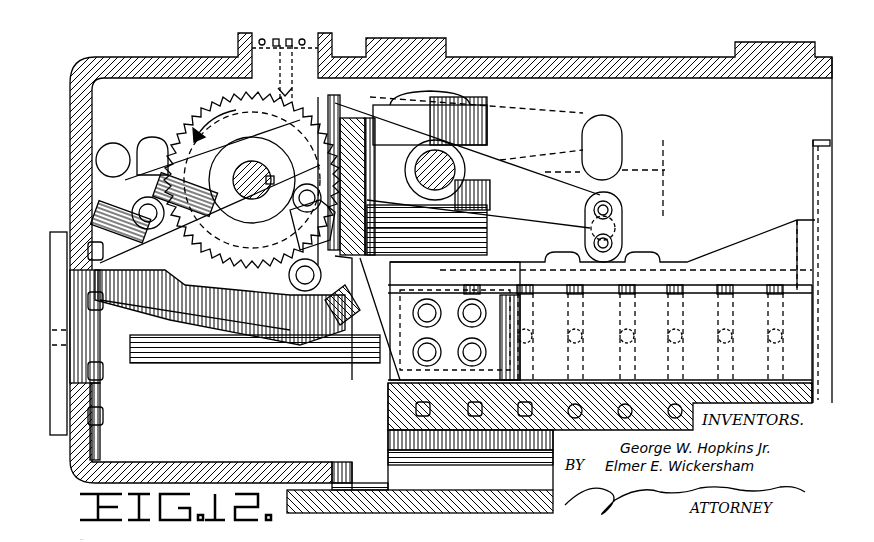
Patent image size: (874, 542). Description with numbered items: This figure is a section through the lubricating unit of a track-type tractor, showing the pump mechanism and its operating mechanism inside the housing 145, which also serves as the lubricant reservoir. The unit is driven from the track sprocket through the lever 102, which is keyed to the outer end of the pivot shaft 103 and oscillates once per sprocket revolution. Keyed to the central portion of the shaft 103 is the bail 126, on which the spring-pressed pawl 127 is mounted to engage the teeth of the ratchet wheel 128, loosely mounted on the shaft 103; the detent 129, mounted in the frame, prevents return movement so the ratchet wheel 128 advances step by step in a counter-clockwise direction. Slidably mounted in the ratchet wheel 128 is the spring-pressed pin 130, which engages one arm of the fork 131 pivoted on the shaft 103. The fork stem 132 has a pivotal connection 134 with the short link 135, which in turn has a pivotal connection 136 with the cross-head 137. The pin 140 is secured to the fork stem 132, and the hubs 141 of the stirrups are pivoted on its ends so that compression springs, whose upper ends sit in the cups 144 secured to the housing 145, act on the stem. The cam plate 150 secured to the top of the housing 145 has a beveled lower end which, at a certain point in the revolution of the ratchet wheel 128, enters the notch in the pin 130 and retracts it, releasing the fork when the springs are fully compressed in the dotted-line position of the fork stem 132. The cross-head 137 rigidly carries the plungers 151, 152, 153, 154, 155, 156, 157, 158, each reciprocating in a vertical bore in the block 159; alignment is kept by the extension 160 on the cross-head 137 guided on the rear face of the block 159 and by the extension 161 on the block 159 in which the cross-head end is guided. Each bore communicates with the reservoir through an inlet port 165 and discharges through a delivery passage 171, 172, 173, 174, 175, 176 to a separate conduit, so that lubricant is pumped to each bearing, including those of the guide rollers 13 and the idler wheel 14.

The lever 102 is at (63, 208).
The pivot shaft 103 is at (235, 170).
The guide rollers 13 is at (270, 190).
The idler wheel 14 is at (274, 21).
The bail 126 is at (208, 230).
The spring-pressed pawl 127 is at (152, 137).
The ratchet wheel 128 is at (222, 112).
The detent 129 is at (310, 236).
The pin 130 is at (252, 180).
The fork 131 is at (327, 125).
The fork stem 132 is at (553, 212).
The pivotal connection 134 is at (610, 212).
The short link 135 is at (618, 230).
The pivotal connection 136 is at (616, 246).
The cross-head 137 is at (765, 238).
The pin 140 is at (455, 182).
The hubs 141 is at (467, 205).
The cups 144 is at (472, 128).
The housing 145 is at (557, 67).
The cam plate 150 is at (283, 100).
The plunger 151 is at (448, 276).
The plunger 152 is at (488, 276).
The plunger 153 is at (533, 276).
The plunger 154 is at (583, 276).
The plunger 155 is at (633, 276).
The plunger 156 is at (678, 276).
The plunger 157 is at (723, 276).
The plunger 158 is at (776, 276).
The block 159 is at (412, 419).
The extension 160 is at (394, 386).
The extension 161 is at (818, 162).
The inlet port 165 is at (634, 345).
The delivery passage 171 is at (428, 420).
The delivery passage 172 is at (478, 420).
The delivery passage 173 is at (530, 420).
The delivery passage 174 is at (575, 405).
The delivery passage 175 is at (625, 405).
The delivery passage 176 is at (675, 405).